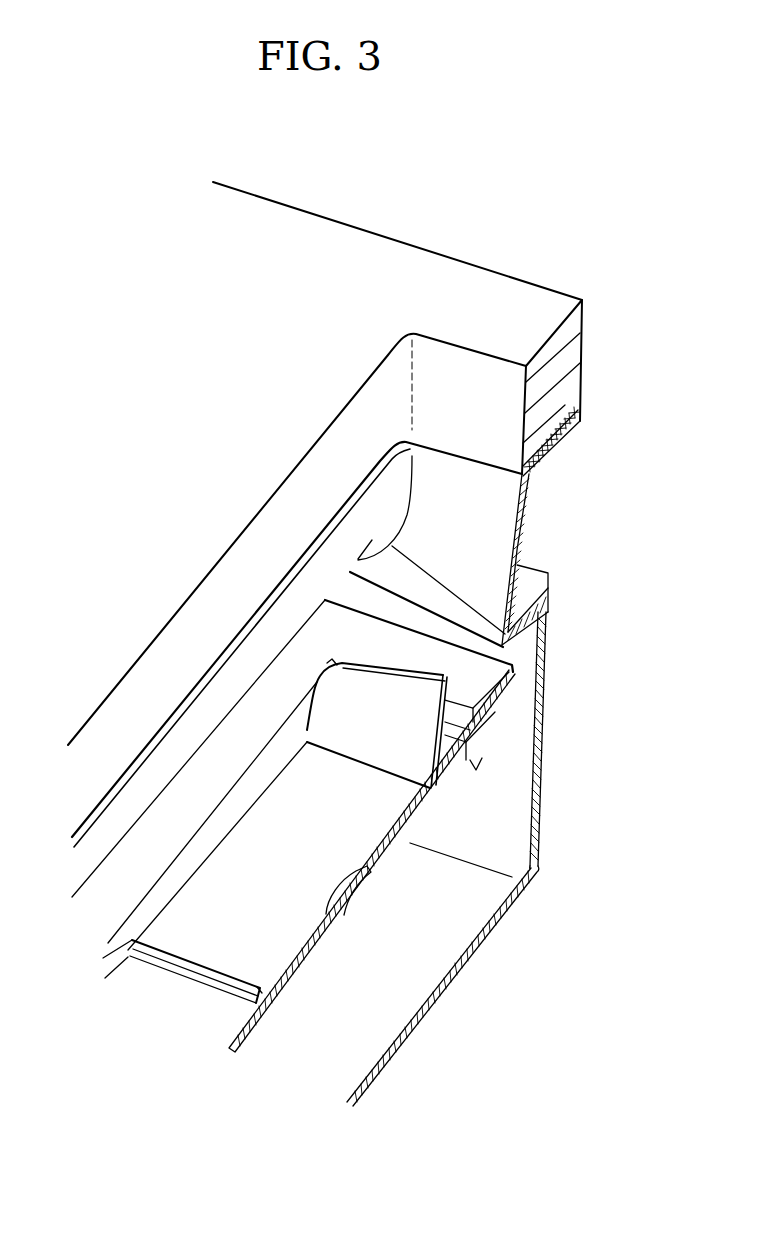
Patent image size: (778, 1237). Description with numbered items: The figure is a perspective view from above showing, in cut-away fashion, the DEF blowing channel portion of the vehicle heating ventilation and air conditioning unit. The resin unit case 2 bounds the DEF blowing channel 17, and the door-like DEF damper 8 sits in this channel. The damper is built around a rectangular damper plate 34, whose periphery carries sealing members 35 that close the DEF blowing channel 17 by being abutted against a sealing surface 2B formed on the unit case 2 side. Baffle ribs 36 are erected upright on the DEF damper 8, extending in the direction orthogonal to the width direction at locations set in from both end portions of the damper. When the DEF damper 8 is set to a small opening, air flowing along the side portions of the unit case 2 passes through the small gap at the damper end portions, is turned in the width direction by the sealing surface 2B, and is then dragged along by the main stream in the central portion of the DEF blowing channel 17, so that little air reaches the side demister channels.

The unit case 2 is at (556, 445).
The sealing surface 2B is at (525, 622).
The sealing members 35 is at (477, 677).
The baffle ribs 36 is at (353, 693).
The damper plate 34 is at (213, 893).
The DEF damper 8 is at (395, 884).
The DEF blowing channel 17 is at (410, 977).